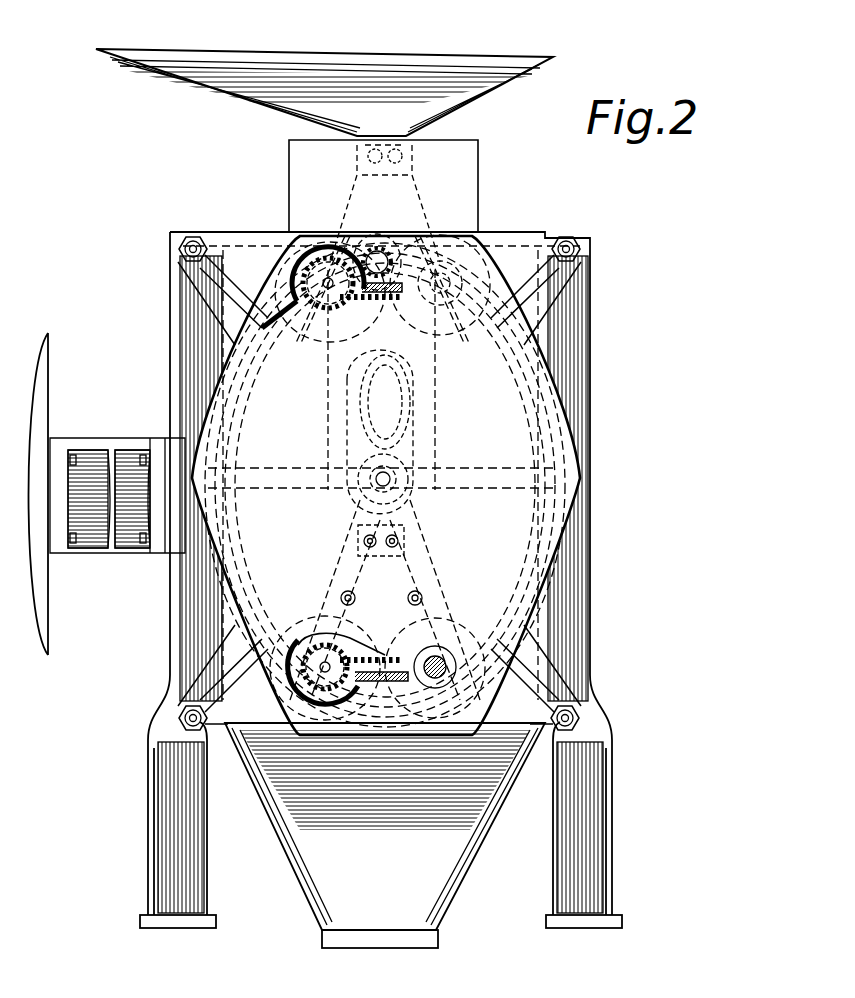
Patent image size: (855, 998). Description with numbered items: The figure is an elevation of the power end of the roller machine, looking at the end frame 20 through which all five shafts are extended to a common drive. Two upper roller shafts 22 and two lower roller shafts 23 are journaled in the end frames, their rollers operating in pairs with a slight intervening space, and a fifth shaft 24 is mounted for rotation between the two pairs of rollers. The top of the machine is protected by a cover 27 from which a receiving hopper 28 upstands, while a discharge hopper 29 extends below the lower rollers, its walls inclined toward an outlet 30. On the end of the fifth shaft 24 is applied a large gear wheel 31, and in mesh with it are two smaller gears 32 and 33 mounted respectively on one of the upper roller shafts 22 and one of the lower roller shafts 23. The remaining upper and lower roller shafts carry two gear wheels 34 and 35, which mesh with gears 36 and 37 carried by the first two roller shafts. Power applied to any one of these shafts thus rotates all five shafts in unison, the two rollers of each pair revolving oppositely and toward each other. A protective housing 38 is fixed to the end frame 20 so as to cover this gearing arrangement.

The end frame 20 is at (592, 596).
The upper roller shaft 22 is at (328, 280).
The lower roller shaft 23 is at (322, 670).
The fifth shaft 24 is at (365, 462).
The cover 27 is at (480, 170).
The receiving hopper 28 is at (262, 42).
The discharge hopper 29 is at (320, 835).
The outlet 30 is at (368, 949).
The large gear wheel 31 is at (345, 650).
The smaller gear 32 is at (298, 275).
The smaller gear 33 is at (348, 650).
The gear wheel 34 is at (445, 350).
The gear wheel 35 is at (466, 602).
The gear 36 is at (295, 335).
The gear 37 is at (296, 606).
The protective housing 38 is at (555, 372).